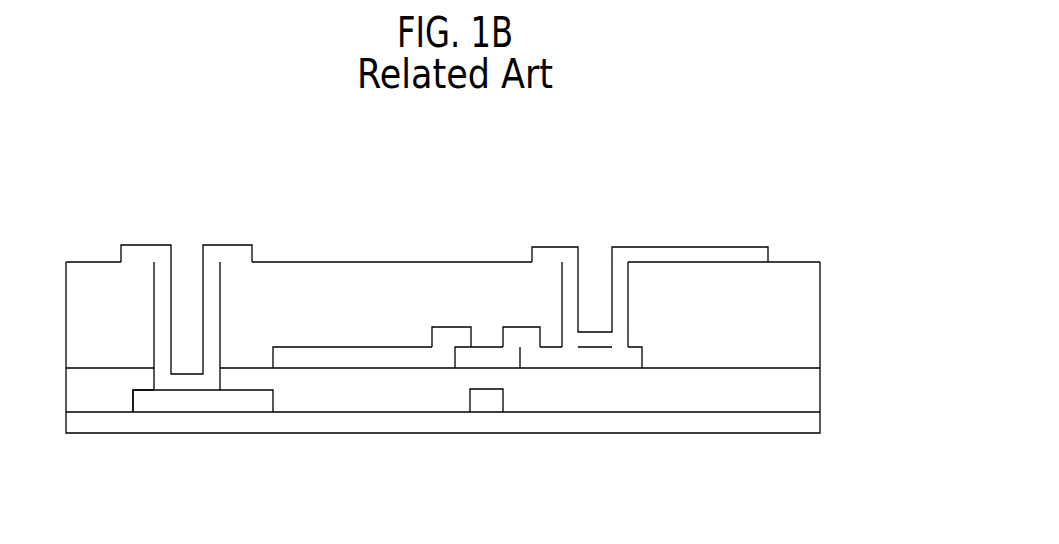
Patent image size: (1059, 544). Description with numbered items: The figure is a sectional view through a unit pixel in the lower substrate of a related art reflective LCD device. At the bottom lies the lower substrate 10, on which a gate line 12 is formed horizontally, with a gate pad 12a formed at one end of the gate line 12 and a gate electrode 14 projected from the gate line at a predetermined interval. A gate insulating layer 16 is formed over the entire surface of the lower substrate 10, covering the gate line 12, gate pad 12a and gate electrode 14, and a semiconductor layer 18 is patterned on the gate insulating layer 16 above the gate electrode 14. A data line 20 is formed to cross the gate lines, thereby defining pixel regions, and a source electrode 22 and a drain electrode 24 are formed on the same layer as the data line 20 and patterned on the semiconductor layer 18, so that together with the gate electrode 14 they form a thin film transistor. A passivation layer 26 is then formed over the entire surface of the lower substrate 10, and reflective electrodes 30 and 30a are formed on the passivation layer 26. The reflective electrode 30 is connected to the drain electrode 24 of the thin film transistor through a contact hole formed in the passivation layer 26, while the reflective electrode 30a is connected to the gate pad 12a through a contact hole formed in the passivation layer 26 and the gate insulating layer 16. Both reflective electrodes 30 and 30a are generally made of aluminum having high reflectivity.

The lower substrate 10 is at (820, 423).
The gate line 12 is at (249, 402).
The gate pad 12a is at (159, 402).
The gate electrode 14 is at (486, 403).
The gate insulating layer 16 is at (820, 390).
The semiconductor layer 18 is at (488, 357).
The data line 20 is at (312, 360).
The source electrode 22 is at (455, 335).
The drain electrode 24 is at (532, 335).
The passivation layer 26 is at (820, 329).
The reflective electrode 30 is at (703, 250).
The reflective electrode 30a is at (221, 250).